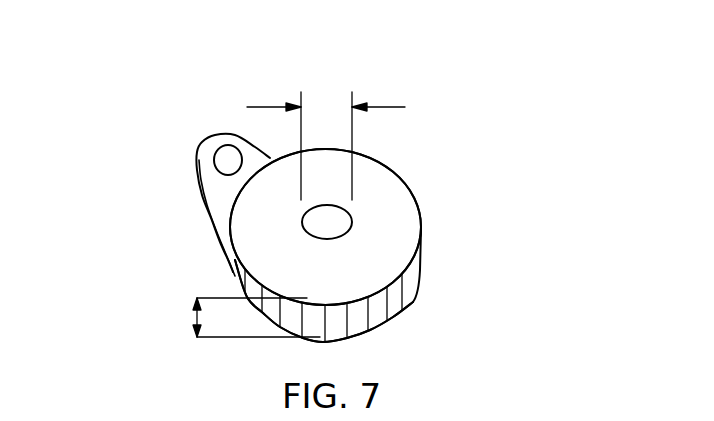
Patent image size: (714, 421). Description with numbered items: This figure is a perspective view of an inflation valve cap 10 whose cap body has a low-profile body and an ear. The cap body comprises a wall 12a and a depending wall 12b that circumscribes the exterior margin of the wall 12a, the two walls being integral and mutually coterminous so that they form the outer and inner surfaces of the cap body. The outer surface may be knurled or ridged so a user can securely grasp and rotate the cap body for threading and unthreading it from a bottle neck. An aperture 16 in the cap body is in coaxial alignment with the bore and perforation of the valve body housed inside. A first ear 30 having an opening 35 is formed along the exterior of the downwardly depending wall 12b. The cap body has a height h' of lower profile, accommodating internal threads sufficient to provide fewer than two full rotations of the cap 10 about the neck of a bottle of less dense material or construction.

The inflation valve cap 10 is at (525, 128).
The wall 12a is at (395, 220).
The depending wall 12b is at (412, 298).
The aperture 16 is at (325, 112).
The first ear 30 is at (197, 195).
The opening 35 is at (222, 160).
The height h' is at (213, 317).